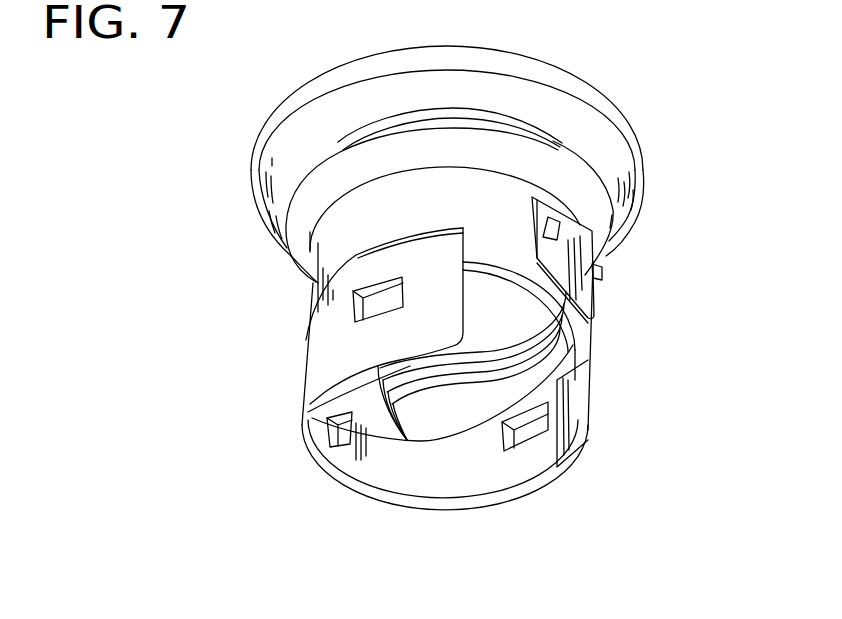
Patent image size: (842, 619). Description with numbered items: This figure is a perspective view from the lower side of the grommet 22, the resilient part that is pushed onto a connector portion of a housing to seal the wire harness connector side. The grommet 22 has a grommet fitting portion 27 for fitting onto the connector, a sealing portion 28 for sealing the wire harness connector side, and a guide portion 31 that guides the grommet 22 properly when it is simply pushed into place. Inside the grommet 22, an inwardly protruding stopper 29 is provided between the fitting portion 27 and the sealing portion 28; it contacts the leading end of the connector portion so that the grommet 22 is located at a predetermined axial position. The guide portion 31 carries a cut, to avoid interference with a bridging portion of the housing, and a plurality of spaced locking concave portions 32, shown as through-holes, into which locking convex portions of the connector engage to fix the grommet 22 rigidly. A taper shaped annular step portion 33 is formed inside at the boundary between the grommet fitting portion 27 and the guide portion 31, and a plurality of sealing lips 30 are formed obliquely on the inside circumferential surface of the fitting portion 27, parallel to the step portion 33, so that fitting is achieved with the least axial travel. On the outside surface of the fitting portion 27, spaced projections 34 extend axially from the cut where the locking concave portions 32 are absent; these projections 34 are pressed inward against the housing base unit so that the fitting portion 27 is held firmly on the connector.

The grommet 22 is at (606, 92).
The grommet fitting portion 27 is at (318, 283).
The sealing portion 28 is at (255, 198).
The stopper 29 is at (493, 297).
The sealing lips 30 is at (407, 435).
The guide portion 31 is at (303, 376).
The locking concave portions 32 is at (393, 310).
The annular step portion 33 is at (452, 419).
The projections 34 is at (560, 225).